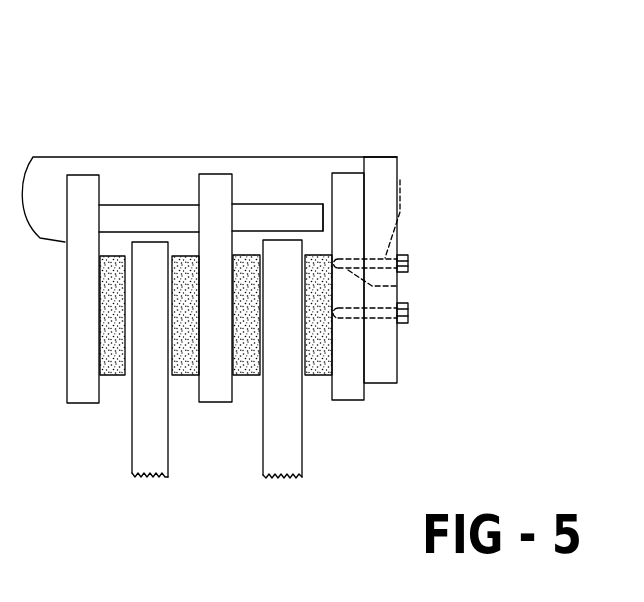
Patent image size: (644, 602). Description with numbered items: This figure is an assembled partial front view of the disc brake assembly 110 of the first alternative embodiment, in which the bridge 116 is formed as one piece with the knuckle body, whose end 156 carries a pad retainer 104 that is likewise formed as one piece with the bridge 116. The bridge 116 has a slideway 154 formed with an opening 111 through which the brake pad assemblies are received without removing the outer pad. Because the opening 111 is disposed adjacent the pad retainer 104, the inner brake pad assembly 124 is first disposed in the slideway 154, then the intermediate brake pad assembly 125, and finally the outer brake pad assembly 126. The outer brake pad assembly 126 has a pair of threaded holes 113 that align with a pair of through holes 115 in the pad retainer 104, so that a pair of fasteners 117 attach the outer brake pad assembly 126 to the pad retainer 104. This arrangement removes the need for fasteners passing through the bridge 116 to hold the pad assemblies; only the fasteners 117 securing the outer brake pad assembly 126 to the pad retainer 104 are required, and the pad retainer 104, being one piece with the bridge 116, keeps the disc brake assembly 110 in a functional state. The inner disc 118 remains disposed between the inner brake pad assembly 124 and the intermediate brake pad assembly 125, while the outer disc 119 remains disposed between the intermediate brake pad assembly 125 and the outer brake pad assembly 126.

The disc brake assembly 110 is at (438, 109).
The pad retainer 104 is at (397, 180).
The bridge 116 is at (162, 158).
The end 156 is at (378, 157).
The inner brake pad assembly 124 is at (78, 180).
The intermediate brake pad assembly 125 is at (215, 177).
The outer brake pad assembly 126 is at (340, 184).
The slideway 154 is at (266, 205).
The opening 111 is at (323, 204).
The inner disc 118 is at (132, 462).
The outer disc 119 is at (302, 448).
The fasteners 117 is at (408, 261).
The through holes 115 is at (400, 215).
The threaded holes 113 is at (397, 285).